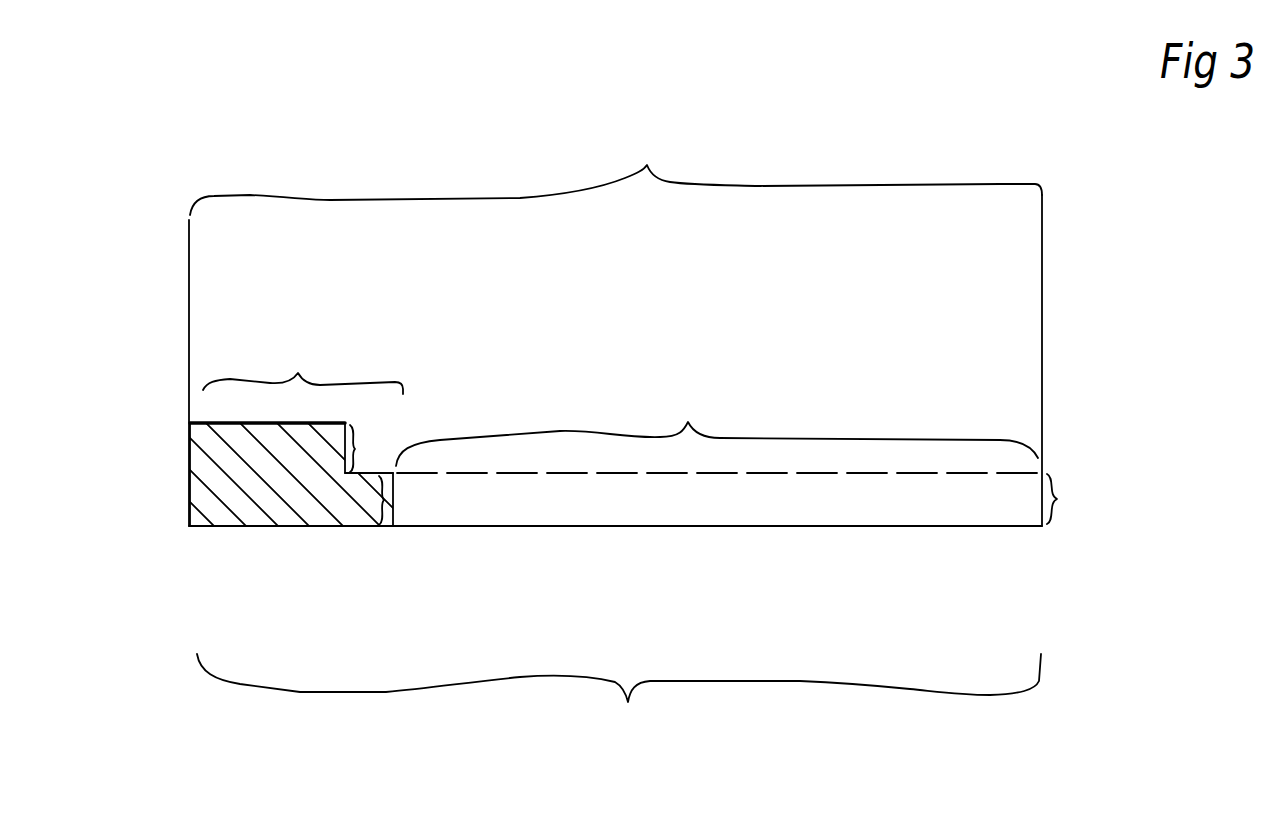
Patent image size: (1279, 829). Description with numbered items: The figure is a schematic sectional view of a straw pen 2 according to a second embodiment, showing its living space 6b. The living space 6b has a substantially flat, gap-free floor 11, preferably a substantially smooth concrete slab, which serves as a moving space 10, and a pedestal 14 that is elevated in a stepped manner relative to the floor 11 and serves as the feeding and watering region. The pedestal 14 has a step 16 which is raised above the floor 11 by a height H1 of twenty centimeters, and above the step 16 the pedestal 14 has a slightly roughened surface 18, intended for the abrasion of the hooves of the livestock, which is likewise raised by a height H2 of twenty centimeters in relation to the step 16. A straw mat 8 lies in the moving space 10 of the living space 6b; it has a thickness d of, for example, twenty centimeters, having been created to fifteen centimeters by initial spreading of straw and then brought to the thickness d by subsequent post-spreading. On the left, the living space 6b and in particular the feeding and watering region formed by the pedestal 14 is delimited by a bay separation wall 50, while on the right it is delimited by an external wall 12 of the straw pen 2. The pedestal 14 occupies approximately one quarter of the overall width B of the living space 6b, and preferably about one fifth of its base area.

The straw pen 2 is at (527, 150).
The living space 6b is at (616, 169).
The straw mat 8 is at (538, 498).
The moving space 10 is at (717, 427).
The floor 11 is at (859, 522).
The external wall 12 is at (1045, 338).
The pedestal 14 is at (303, 358).
The step 16 is at (371, 473).
The roughened surface 18 is at (190, 417).
The bay separation wall 50 is at (188, 310).
The height H1 is at (378, 500).
The height H2 is at (357, 447).
The thickness d is at (1067, 499).
The overall width B is at (614, 752).